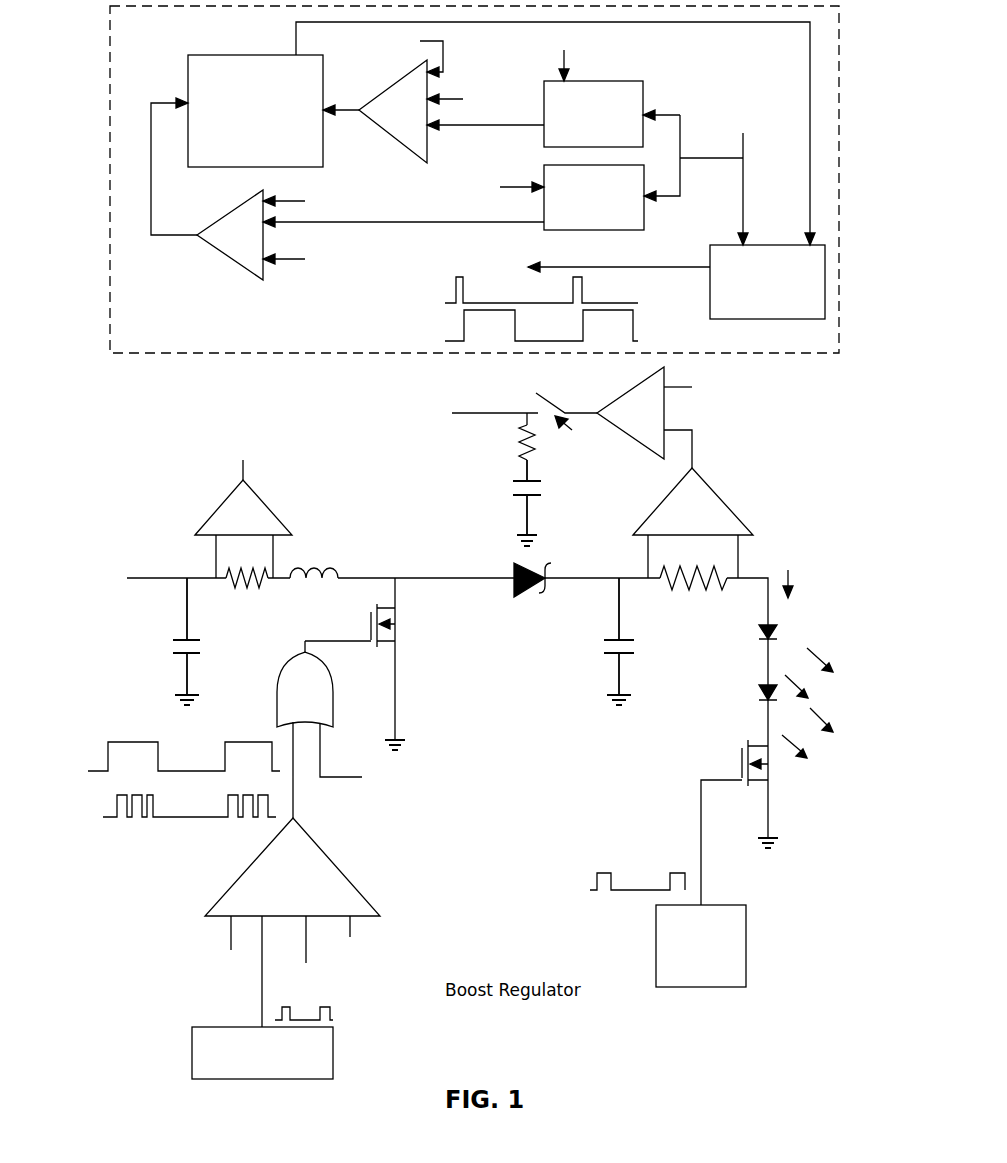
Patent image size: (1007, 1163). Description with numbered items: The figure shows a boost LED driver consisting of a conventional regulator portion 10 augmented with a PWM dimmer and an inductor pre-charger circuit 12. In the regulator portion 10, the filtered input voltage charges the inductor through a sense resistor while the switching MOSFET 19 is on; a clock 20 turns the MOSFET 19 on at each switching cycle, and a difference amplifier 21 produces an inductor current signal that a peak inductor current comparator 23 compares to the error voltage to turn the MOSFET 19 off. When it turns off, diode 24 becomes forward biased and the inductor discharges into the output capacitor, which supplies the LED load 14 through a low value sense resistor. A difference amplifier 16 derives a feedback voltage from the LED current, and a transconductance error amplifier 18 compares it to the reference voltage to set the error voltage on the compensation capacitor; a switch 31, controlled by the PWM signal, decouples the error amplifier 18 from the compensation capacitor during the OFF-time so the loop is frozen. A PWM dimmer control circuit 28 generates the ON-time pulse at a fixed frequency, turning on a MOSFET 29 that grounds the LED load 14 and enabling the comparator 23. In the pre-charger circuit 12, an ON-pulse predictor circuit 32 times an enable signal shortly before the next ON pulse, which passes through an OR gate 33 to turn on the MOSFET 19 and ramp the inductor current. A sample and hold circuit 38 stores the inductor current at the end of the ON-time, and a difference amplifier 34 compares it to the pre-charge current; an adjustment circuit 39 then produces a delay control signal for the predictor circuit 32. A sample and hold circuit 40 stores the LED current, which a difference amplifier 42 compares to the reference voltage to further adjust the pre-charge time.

The regulator portion 10 is at (138, 495).
The pre-charger circuit 12 is at (258, 353).
The LED load 14 is at (750, 651).
The difference amplifier 16 is at (732, 505).
The transconductance error amplifier 18 is at (626, 390).
The switching MOSFET 19 is at (405, 632).
The clock 20 is at (192, 1040).
The difference amplifier 21 is at (230, 492).
The peak inductor current comparator 23 is at (246, 872).
The diode 24 is at (508, 597).
The PWM dimmer control circuit 28 is at (746, 926).
The MOSFET 29 is at (775, 757).
The switch 31 is at (536, 385).
The ON-pulse predictor circuit 32 is at (710, 293).
The OR gate 33 is at (286, 675).
The difference amplifier 34 is at (232, 208).
The sample and hold circuit 38 is at (647, 177).
The adjustment circuit 39 is at (225, 55).
The sample and hold circuit 40 is at (602, 81).
The difference amplifier 42 is at (402, 80).